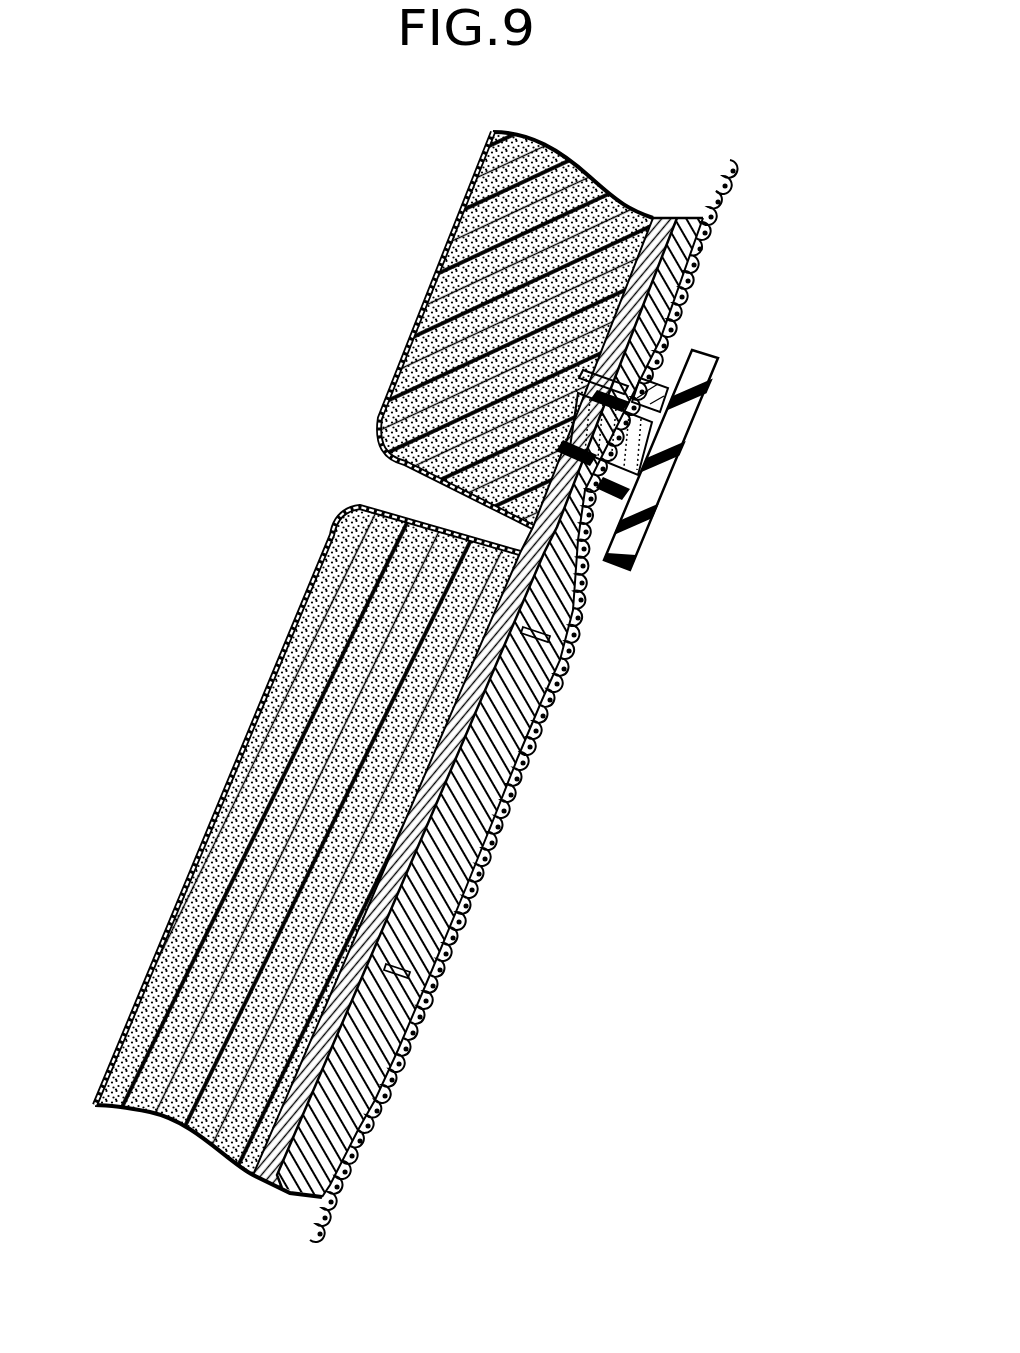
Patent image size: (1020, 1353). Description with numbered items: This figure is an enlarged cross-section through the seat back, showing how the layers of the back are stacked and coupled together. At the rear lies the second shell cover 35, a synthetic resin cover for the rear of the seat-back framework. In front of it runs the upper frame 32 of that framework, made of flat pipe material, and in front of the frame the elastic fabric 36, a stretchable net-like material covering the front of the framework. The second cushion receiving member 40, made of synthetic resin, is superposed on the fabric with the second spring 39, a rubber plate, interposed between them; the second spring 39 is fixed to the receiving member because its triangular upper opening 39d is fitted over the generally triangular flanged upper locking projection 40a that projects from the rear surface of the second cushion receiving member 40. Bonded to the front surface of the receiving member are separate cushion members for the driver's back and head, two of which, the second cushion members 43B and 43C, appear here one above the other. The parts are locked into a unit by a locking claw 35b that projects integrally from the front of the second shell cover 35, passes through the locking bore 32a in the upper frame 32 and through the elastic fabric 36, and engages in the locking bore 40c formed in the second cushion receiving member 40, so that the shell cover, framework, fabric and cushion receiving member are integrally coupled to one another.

The second cushion member 43C is at (440, 273).
The second cushion member 43B is at (280, 690).
The second cushion receiving member 40 is at (690, 264).
The upper locking projection 40a is at (562, 700).
The locking bore 40c is at (580, 427).
The second spring 39 is at (383, 1070).
The upper opening 39d is at (400, 968).
The elastic fabric 36 is at (742, 184).
The second shell cover 35 is at (698, 431).
The locking claw 35b is at (590, 383).
The upper frame 32 is at (652, 380).
The locking bore 32a is at (643, 440).